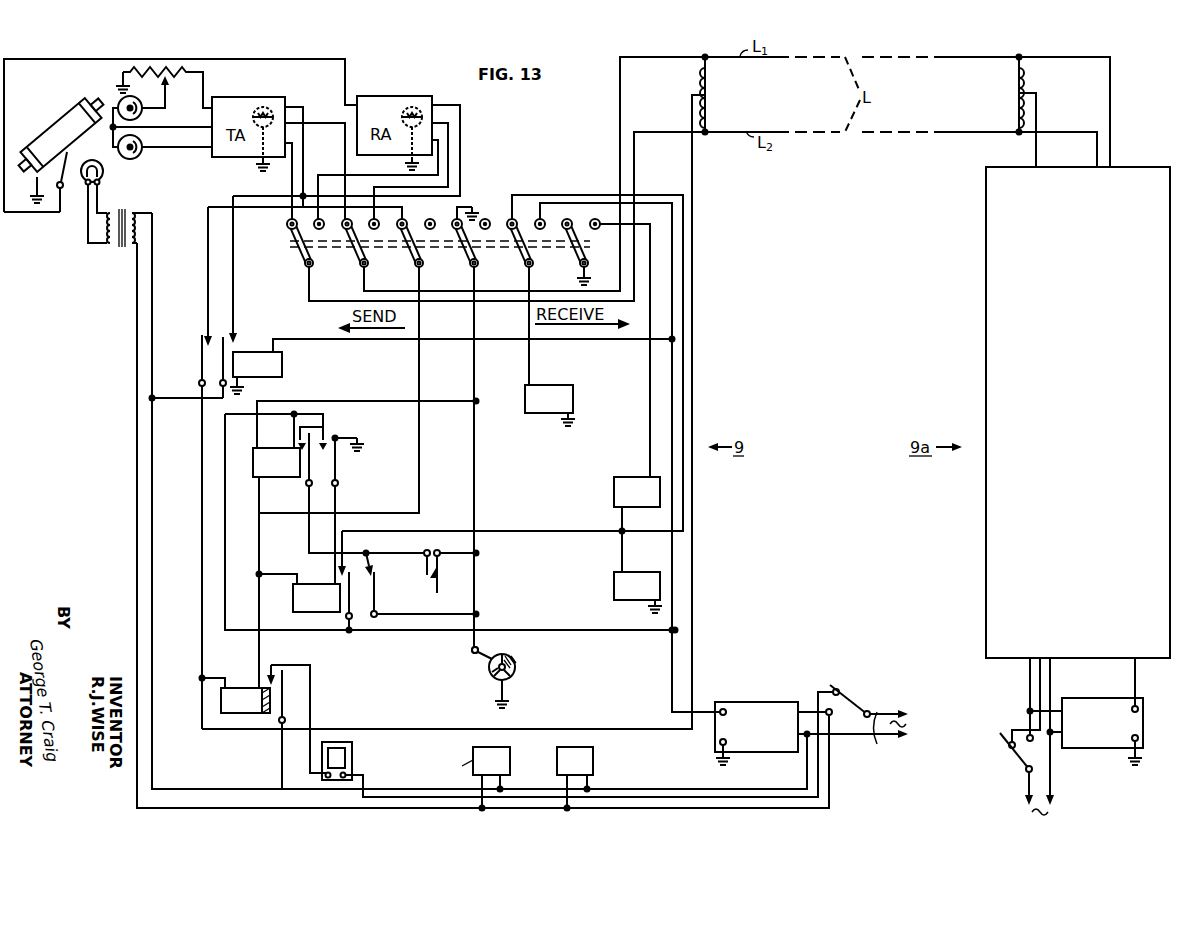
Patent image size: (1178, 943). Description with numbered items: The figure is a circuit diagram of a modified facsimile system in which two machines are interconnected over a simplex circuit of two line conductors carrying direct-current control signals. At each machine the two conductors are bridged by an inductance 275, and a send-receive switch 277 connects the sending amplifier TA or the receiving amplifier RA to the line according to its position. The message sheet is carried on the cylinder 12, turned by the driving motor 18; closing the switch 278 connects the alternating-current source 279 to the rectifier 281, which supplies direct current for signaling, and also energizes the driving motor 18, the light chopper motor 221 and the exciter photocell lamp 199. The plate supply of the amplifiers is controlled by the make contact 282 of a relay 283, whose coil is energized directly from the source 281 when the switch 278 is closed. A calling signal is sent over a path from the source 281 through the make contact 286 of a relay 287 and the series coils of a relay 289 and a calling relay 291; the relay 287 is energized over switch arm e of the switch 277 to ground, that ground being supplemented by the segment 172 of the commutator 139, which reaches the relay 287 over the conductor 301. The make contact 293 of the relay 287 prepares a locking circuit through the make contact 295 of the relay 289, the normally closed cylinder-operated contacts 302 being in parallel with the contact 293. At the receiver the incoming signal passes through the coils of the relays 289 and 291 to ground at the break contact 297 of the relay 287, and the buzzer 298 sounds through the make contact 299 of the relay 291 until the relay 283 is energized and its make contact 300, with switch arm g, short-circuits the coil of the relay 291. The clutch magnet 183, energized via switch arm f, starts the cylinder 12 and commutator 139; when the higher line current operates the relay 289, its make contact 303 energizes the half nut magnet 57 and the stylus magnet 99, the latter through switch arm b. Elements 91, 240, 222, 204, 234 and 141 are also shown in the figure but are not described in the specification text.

The cylinder 12 is at (54, 118).
The switch 91 is at (70, 182).
The exciter photocell lamp 199 is at (101, 176).
The transformer 240 is at (119, 253).
The jack 222 is at (118, 100).
The jack 204 is at (141, 150).
The potentiometer 234 is at (192, 72).
The send-receive switch 277 is at (284, 262).
The inductance 275 is at (711, 90).
The make contact of relay 283 300 is at (207, 342).
The make contact of relay 283 282 is at (233, 346).
The relay 283 is at (282, 365).
The make contact of relay 287 293 is at (308, 414).
The make contact of relay 287 286 is at (325, 435).
The break contact of relay 287 297 is at (337, 444).
The relay 287 is at (288, 473).
The clutch magnet 183 is at (573, 400).
The conductor 301 is at (480, 473).
The stylus magnet 99 is at (614, 494).
The half nut magnet 57 is at (614, 590).
The make contact of relay 289 303 is at (345, 563).
The make contact of relay 289 295 is at (372, 580).
The cylinder operated contacts 302 is at (434, 581).
The high current relay 289 is at (298, 606).
The contact 141 is at (481, 647).
The commutator 139 is at (515, 673).
The commutator segment 172 is at (490, 673).
The calling relay 291 is at (240, 690).
The make contact of relay 291 299 is at (271, 670).
The buzzer 298 is at (352, 770).
The driving motor 18 is at (510, 750).
The light chopper motor 221 is at (557, 771).
The rectifier 281 is at (746, 704).
The switch 278 is at (1010, 752).
The source of alternating current potential 279 is at (887, 743).